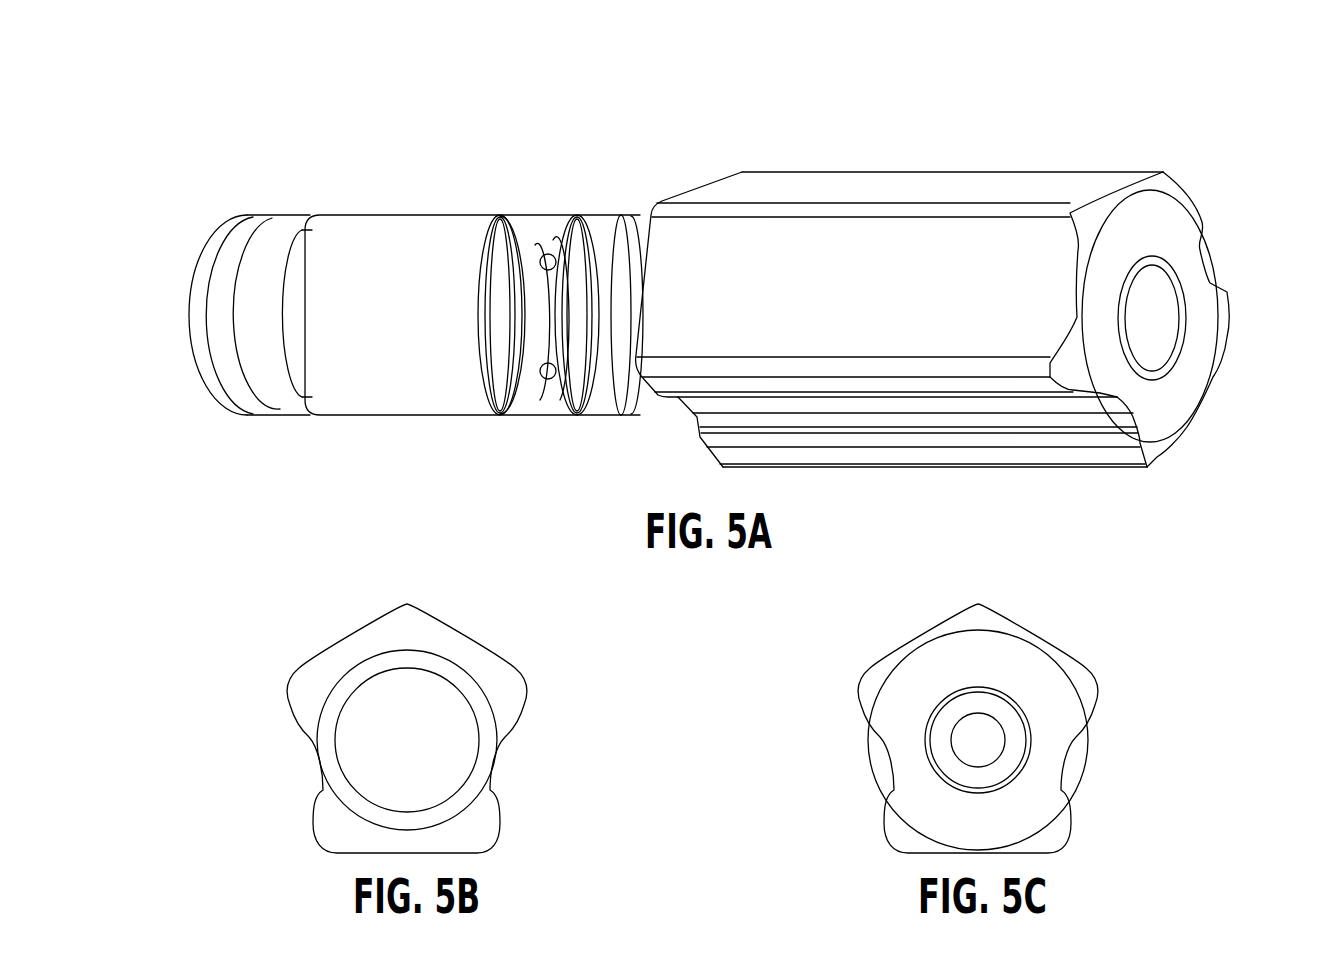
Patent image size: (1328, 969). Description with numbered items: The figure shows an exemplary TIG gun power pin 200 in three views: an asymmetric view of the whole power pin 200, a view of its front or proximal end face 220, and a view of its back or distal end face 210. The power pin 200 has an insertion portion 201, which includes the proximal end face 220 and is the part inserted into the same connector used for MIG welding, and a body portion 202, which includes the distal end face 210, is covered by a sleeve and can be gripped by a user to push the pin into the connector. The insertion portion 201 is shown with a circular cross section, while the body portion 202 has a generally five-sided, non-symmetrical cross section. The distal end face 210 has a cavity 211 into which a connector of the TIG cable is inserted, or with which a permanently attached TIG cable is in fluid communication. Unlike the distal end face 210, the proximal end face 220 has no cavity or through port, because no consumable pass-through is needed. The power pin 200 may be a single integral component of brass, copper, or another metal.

In FIG. 5A, the power pin 200 is at (1170, 82).
In FIG. 5A, the insertion portion 201 is at (630, 170).
In FIG. 5A, the body portion 202 is at (1142, 145).
In FIG. 5A, the distal end face 210 is at (1200, 370).
In FIG. 5C, the distal end face 210 is at (1040, 810).
In FIG. 5A, the cavity 211 is at (1160, 310).
In FIG. 5C, the cavity 211 is at (987, 737).
In FIG. 5A, the proximal end face 220 is at (190, 333).
In FIG. 5B, the proximal end face 220 is at (418, 723).